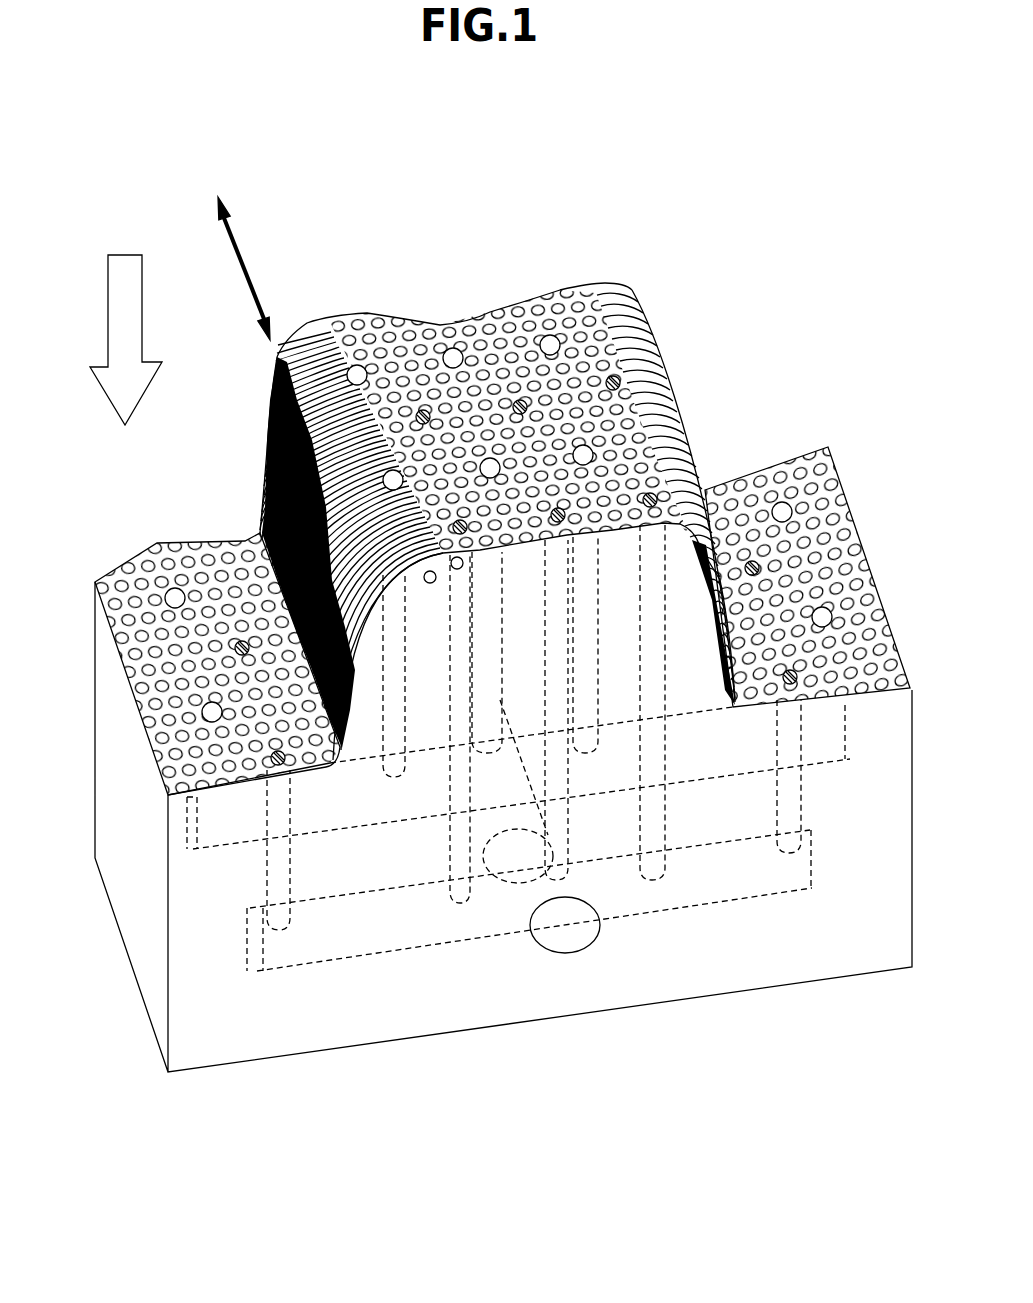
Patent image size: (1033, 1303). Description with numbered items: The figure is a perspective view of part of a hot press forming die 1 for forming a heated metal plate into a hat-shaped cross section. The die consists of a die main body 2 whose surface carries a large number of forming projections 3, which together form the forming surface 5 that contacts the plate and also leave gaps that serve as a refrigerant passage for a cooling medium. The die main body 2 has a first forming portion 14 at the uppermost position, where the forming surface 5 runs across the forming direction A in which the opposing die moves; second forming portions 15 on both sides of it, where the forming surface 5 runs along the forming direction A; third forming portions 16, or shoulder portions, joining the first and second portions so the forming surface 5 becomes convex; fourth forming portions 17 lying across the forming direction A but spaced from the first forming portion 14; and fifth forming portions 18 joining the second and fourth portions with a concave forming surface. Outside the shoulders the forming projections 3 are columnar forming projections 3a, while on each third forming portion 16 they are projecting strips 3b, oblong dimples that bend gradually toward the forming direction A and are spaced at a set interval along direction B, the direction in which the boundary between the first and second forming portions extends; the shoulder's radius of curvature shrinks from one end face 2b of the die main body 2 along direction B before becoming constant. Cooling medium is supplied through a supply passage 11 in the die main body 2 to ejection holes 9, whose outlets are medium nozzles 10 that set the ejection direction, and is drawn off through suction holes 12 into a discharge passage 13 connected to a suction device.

The hot press forming die 1 is at (146, 210).
The die main body 2 is at (140, 903).
The end face of the die main body 2b is at (190, 950).
The forming projections 3 is at (185, 548).
The forming projections with columnar shape 3a is at (450, 345).
The forming projections formed by projecting strips 3b is at (320, 372).
The forming surface 5 is at (497, 473).
The ejection holes 9 is at (720, 483).
The medium nozzle 10 is at (688, 433).
The supply passage 11 is at (568, 952).
The suction holes 12 is at (652, 373).
The discharge passage 13 is at (505, 845).
The first forming portion 14 is at (533, 553).
The second forming portions 15 is at (360, 713).
The third forming portions 16 is at (417, 603).
The fourth forming portions 17 is at (263, 790).
The fifth forming portions 18 is at (352, 775).
The forming direction A is at (108, 290).
The direction B is at (240, 260).